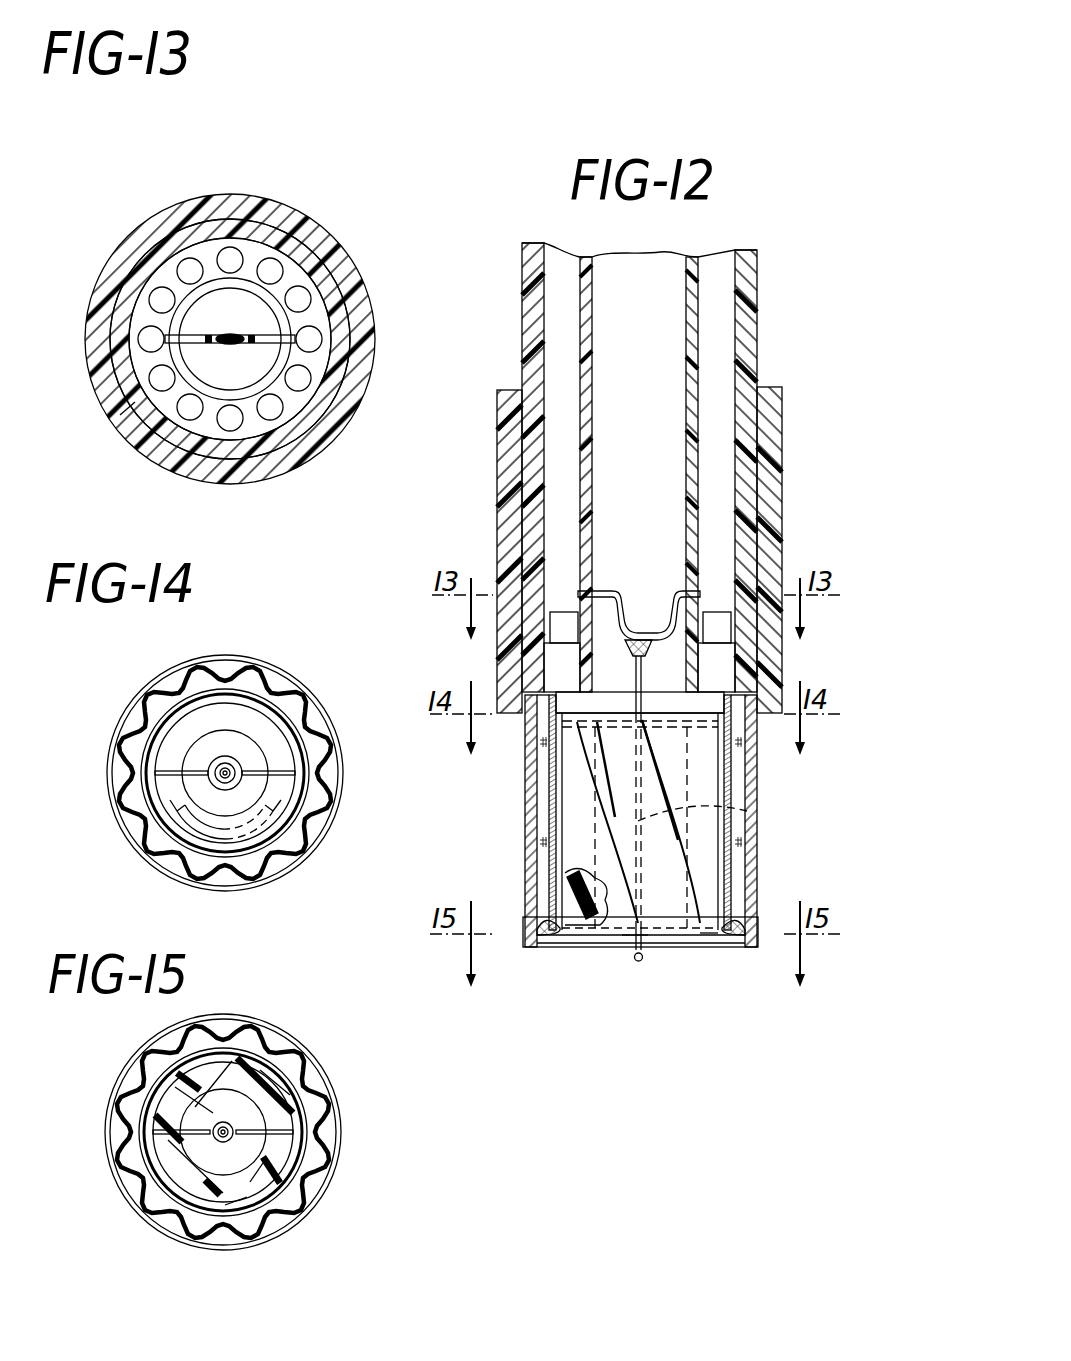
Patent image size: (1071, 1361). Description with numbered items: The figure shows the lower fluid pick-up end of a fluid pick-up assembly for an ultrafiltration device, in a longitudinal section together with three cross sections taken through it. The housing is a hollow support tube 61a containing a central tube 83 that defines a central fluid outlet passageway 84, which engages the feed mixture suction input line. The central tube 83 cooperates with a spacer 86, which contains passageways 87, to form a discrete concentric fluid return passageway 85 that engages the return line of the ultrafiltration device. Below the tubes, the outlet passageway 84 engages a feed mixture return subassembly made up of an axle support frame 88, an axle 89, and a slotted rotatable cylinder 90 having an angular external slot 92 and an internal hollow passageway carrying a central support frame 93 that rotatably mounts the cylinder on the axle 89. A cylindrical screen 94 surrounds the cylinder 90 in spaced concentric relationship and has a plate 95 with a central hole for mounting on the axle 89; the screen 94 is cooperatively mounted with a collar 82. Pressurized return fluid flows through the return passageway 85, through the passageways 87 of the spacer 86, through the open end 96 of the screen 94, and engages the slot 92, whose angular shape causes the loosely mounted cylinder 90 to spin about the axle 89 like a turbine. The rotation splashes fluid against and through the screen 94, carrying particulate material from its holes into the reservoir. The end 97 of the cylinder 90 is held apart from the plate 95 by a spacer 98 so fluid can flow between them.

In FIG. 13, the hollow support tube 61a is at (334, 306).
In FIG. 12, the hollow support tube 61a is at (526, 318).
In FIG. 13, the collar 82 is at (357, 372).
In FIG. 12, the collar 82 is at (507, 491).
In FIG. 13, the central tube 83 is at (148, 401).
In FIG. 12, the central tube 83 is at (684, 314).
In FIG. 13, the fluid outlet passageway 84 is at (235, 372).
In FIG. 12, the fluid outlet passageway 84 is at (605, 420).
In FIG. 12, the fluid return passageway 85 is at (578, 346).
In FIG. 13, the spacer 86 is at (291, 270).
In FIG. 12, the spacer 86 is at (553, 643).
In FIG. 13, the passageways 87 is at (299, 388).
In FIG. 12, the passageways 87 is at (718, 612).
In FIG. 13, the axle support frame 88 is at (182, 337).
In FIG. 12, the axle support frame 88 is at (611, 591).
In FIG. 12, the axle 89 is at (640, 673).
In FIG. 12, the slotted rotatable cylinder 90 is at (678, 756).
In FIG. 14, the slotted rotatable cylinder 90 is at (278, 795).
In FIG. 15, the slotted rotatable cylinder 90 is at (244, 1078).
In FIG. 12, the angular external slot 92 is at (613, 820).
In FIG. 14, the angular external slot 92 is at (195, 828).
In FIG. 15, the angular external slot 92 is at (247, 1197).
In FIG. 14, the central support frame 93 is at (266, 760).
In FIG. 15, the central support frame 93 is at (190, 1098).
In FIG. 12, the cylindrical screen 94 is at (524, 800).
In FIG. 14, the cylindrical screen 94 is at (318, 828).
In FIG. 15, the cylindrical screen 94 is at (314, 1077).
In FIG. 12, the plate 95 is at (592, 946).
In FIG. 12, the open end 96 is at (607, 704).
In FIG. 12, the end of cylinder 97 is at (708, 938).
In FIG. 12, the spacer 98 is at (623, 940).